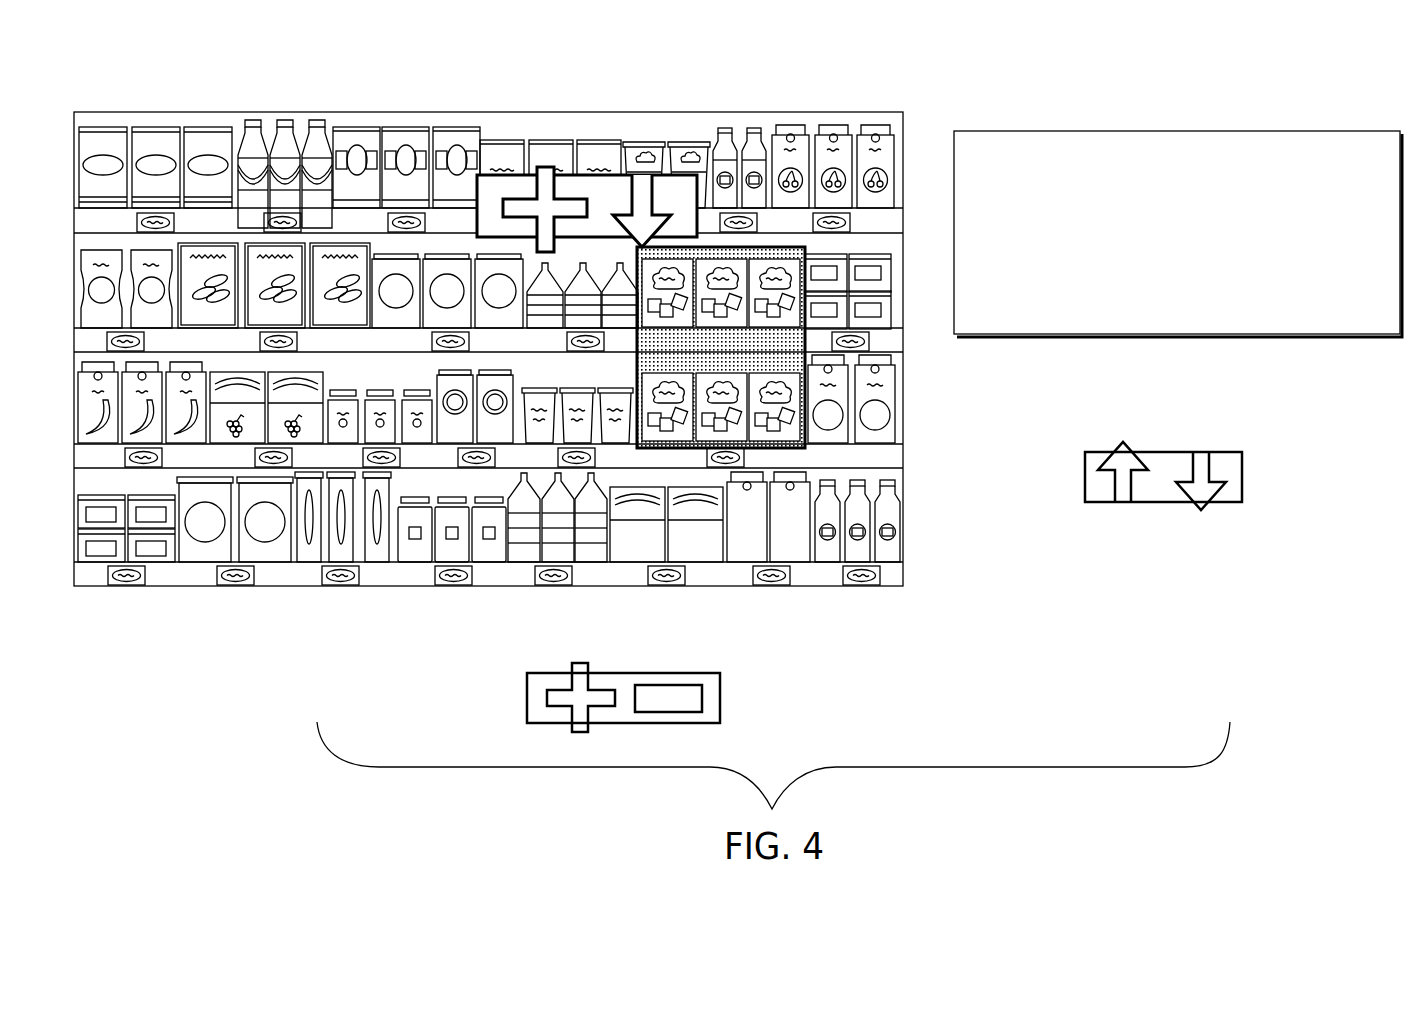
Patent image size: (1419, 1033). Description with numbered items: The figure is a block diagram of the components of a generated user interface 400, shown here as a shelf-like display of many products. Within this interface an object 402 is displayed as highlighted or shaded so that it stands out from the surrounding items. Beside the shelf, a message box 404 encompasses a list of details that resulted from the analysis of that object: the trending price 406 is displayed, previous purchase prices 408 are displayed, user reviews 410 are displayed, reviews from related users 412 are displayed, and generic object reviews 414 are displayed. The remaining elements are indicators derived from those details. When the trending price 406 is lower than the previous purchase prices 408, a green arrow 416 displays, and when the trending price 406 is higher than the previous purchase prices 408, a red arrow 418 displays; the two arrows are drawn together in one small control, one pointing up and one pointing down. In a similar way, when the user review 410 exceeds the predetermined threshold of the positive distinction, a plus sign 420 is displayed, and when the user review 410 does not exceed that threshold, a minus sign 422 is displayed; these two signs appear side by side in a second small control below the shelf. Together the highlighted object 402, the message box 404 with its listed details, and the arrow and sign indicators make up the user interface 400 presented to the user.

The virtual shelf display 400 is at (205, 112).
The object 402 is at (806, 449).
The message box 404 is at (1127, 131).
The trending price 406 is at (1040, 168).
The previous purchase prices 408 is at (1040, 200).
The user reviews 410 is at (1040, 234).
The reviews from related users 412 is at (1040, 271).
The generic object reviews 414 is at (1040, 307).
The green arrow 416 is at (1213, 465).
The red arrow 418 is at (1112, 455).
The plus sign 420 is at (580, 663).
The minus sign 422 is at (680, 683).